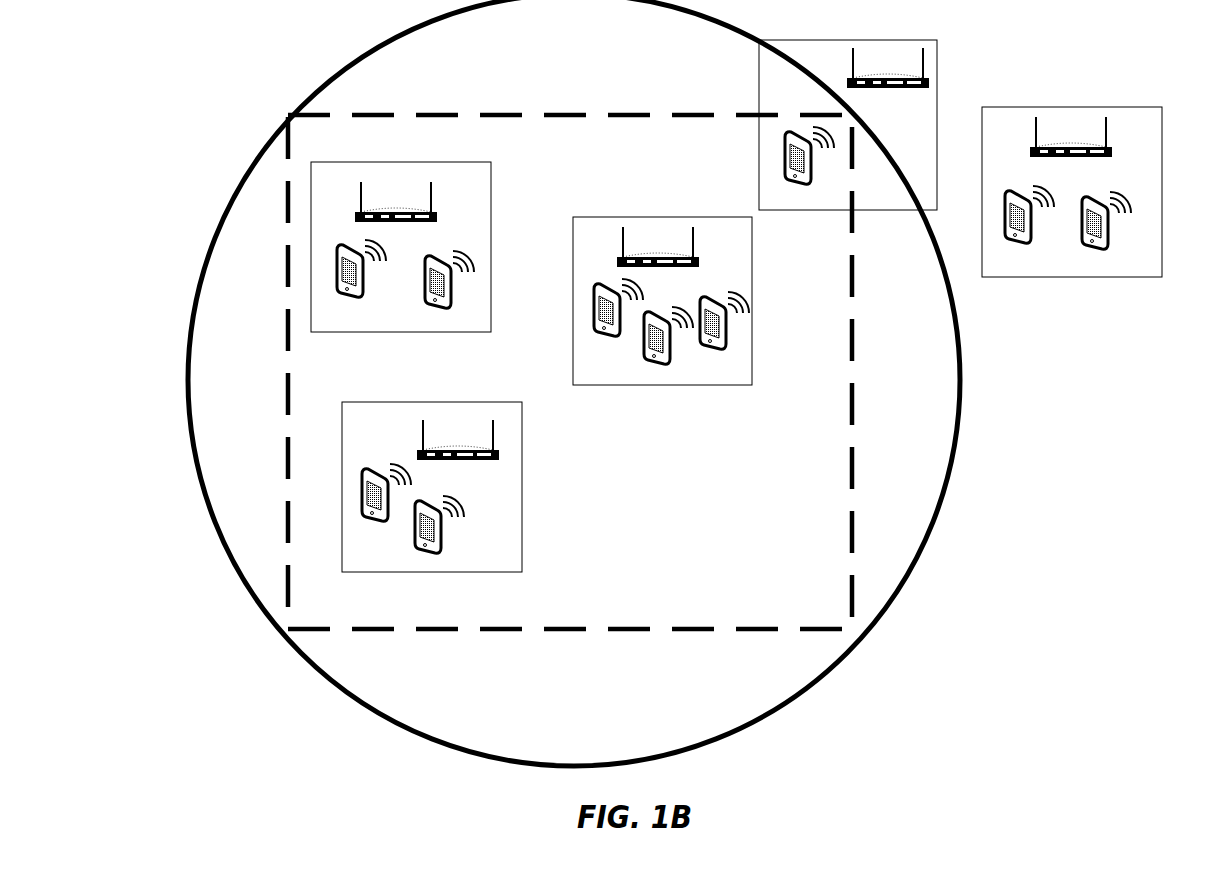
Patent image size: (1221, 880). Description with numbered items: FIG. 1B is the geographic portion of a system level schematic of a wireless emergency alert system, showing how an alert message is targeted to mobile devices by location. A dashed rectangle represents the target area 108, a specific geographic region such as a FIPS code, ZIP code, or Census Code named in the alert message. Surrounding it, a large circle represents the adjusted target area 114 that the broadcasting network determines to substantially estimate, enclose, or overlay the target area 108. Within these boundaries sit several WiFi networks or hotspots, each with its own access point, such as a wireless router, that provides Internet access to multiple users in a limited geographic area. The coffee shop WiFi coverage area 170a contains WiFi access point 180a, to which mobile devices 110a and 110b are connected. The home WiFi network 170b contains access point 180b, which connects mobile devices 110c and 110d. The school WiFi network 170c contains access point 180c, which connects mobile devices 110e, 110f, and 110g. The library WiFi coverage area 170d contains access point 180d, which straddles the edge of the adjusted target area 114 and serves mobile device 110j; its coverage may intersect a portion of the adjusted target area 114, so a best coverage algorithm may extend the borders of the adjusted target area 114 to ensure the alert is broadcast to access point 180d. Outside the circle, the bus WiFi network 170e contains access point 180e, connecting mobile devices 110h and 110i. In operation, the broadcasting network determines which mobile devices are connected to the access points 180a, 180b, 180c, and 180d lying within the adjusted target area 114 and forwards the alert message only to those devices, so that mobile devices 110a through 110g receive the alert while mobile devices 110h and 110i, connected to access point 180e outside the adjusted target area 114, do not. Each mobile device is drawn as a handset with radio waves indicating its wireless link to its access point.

The adjusted target area 114 is at (574, 383).
The target area 108 is at (570, 361).
The WiFi coverage area 170a is at (401, 238).
The WiFi network 170b is at (432, 476).
The WiFi network 170c is at (662, 290).
The WiFi coverage area 170d is at (848, 114).
The WiFi network 170e is at (1072, 181).
The WiFi access point 180a is at (396, 202).
The access point 180b is at (458, 440).
The access point 180c is at (658, 247).
The access point 180d is at (888, 68).
The access point 180e is at (1071, 137).
The mobile device 110a is at (360, 280).
The mobile device 110b is at (448, 288).
The mobile device 110c is at (385, 502).
The mobile device 110d is at (438, 533).
The mobile device 110e is at (617, 317).
The mobile device 110f is at (667, 345).
The mobile device 110g is at (723, 330).
The mobile device 110h is at (1028, 225).
The mobile device 110i is at (1106, 229).
The mobile device 110j is at (809, 166).